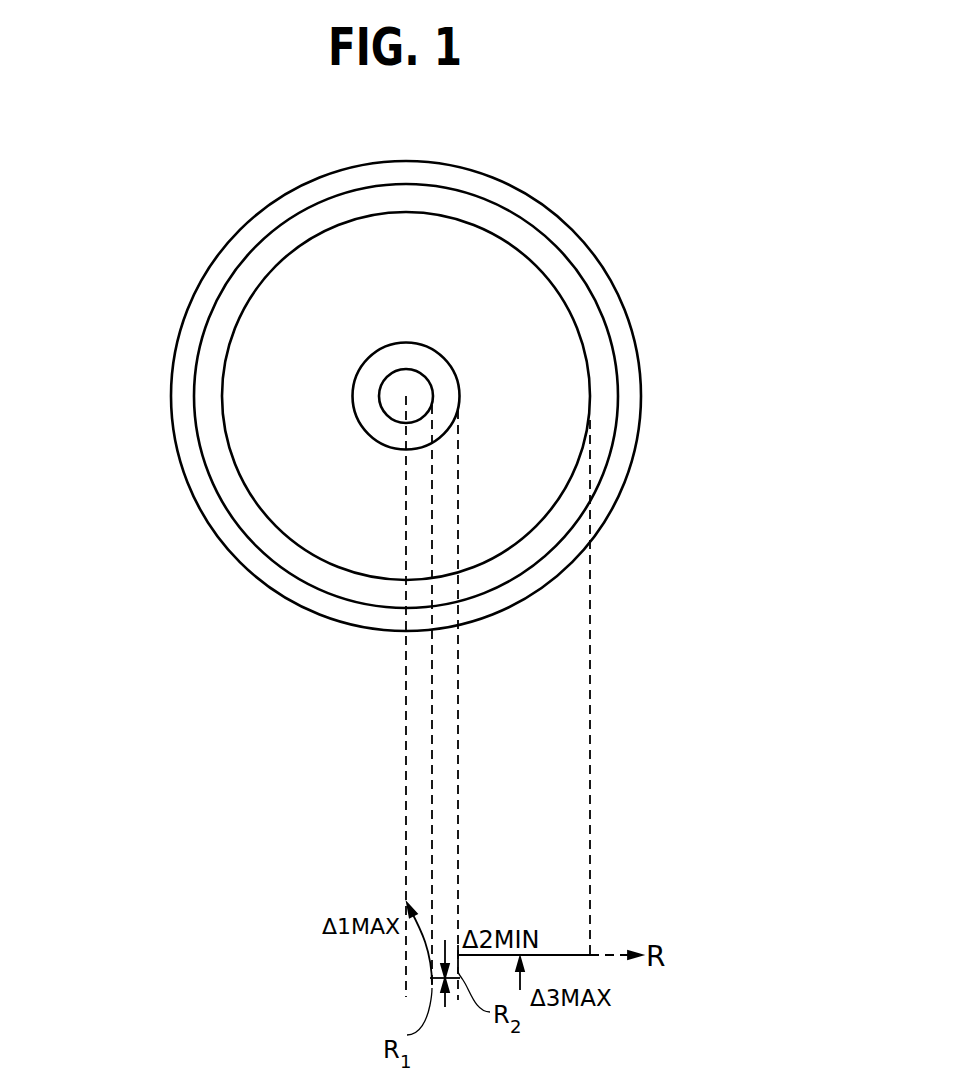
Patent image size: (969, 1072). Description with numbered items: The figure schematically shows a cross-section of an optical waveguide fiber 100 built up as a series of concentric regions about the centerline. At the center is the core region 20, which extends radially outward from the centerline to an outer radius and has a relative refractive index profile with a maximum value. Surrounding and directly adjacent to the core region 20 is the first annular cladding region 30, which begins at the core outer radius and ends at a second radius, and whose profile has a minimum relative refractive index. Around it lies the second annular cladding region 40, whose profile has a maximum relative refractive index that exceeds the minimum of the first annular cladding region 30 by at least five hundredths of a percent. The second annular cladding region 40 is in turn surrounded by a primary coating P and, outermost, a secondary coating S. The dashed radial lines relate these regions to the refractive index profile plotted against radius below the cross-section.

The optical waveguide fiber 100 is at (178, 265).
The core region 20 is at (392, 400).
The first annular cladding region 30 is at (437, 368).
The second annular cladding region 40 is at (577, 430).
The secondary coating S is at (625, 340).
The primary coating P is at (605, 392).